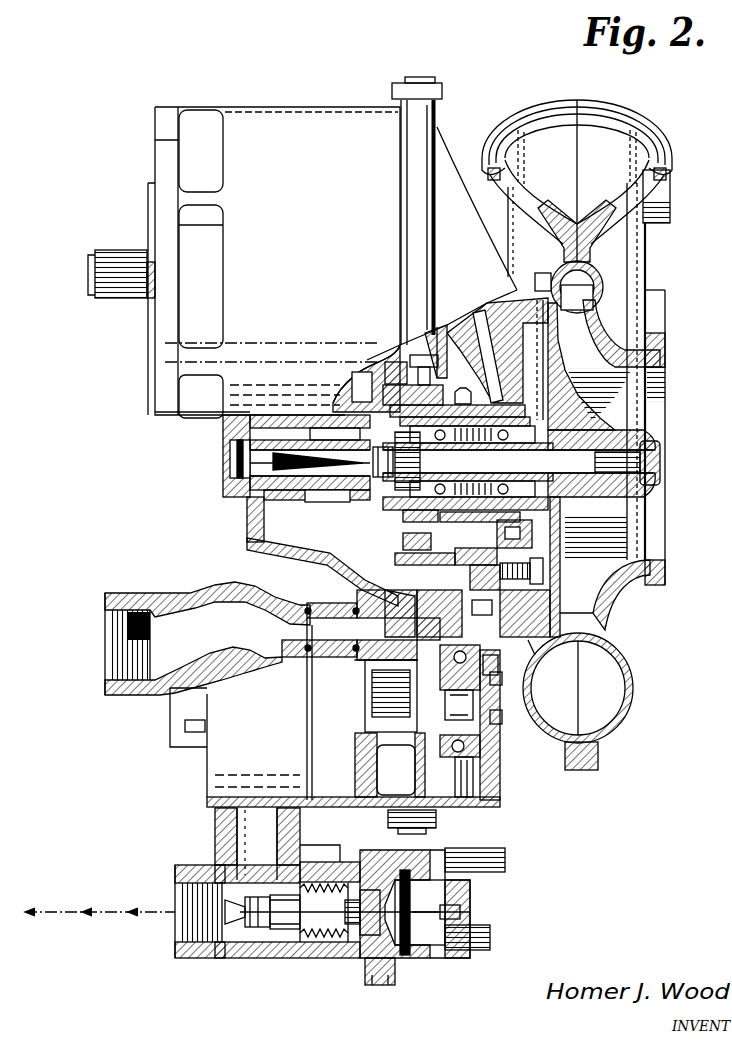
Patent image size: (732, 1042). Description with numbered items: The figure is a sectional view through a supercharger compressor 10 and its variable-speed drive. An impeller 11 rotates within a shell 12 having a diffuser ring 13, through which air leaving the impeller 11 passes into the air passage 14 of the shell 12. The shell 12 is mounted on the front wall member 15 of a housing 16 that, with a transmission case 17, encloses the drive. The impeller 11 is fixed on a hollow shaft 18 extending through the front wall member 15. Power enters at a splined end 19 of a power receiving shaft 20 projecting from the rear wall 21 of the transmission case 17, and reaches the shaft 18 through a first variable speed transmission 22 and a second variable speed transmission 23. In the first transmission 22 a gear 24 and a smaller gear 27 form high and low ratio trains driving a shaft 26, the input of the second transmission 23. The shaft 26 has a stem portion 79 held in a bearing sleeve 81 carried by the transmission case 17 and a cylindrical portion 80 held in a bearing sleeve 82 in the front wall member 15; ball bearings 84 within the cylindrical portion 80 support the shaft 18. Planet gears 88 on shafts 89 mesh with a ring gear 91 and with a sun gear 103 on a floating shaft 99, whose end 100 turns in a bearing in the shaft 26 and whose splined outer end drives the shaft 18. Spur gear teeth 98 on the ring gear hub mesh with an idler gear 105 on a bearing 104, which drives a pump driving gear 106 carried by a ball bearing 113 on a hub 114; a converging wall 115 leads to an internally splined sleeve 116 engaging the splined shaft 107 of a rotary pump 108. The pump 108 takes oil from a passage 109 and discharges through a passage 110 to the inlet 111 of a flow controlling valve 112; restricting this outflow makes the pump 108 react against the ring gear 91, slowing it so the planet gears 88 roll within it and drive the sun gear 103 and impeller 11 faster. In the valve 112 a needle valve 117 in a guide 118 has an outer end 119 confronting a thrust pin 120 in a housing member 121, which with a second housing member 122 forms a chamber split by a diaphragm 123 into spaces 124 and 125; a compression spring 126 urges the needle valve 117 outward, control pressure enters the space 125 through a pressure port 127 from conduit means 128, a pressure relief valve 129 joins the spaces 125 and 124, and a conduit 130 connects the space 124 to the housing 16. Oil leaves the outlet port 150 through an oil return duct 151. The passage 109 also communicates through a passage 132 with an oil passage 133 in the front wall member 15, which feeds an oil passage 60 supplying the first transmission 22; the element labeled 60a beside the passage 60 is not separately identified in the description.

The compressor 10 is at (657, 291).
The impeller 11 is at (584, 352).
The shell 12 is at (648, 258).
The diffuser ring 13 is at (604, 288).
The air passage 14 is at (606, 693).
The front wall member 15 is at (440, 162).
The housing 16 is at (448, 117).
The transmission case 17 is at (346, 100).
The shaft 18 is at (641, 419).
The splined end 19 is at (122, 250).
The power receiving shaft 20 is at (152, 277).
The rear wall 21 is at (156, 413).
The first variable speed transmission 22 is at (320, 268).
The second variable speed transmission 23 is at (250, 548).
The gear 24 is at (336, 392).
The shaft 26 is at (283, 427).
The gear 27 is at (359, 376).
The oil passage 60 is at (490, 338).
The support plate 60a is at (535, 285).
The stem portion 79 is at (244, 500).
The cylindrical portion 80 is at (581, 535).
The bearing sleeve 81 is at (286, 508).
The bearing sleeve 82 is at (402, 561).
The ball bearings 84 is at (518, 461).
The planet gears 88 is at (448, 340).
The shafts 89 is at (393, 352).
The ring gear 91 is at (428, 337).
The spur gear teeth 98 is at (462, 388).
The floating shaft 99 is at (653, 470).
The end 100 is at (390, 468).
The sun gear 103 is at (430, 461).
The bearing 104 is at (536, 657).
The idler gear 105 is at (500, 676).
The pump driving gear 106 is at (440, 756).
The splined shaft 107 is at (372, 698).
The rotary pump 108 is at (286, 726).
The passage 109 is at (203, 618).
The discharge passage 110 is at (254, 834).
The inlet 111 is at (298, 860).
The flow controlling valve 112 is at (312, 882).
The ball bearing 113 is at (478, 744).
The hub 114 is at (490, 700).
The converging wall 115 is at (420, 723).
The internally splined sleeve 116 is at (395, 758).
The needle valve 117 is at (262, 950).
The guide 118 is at (288, 950).
The outer end 119 is at (333, 945).
The thrust pin 120 is at (365, 960).
The housing member 121 is at (380, 845).
The second housing member 122 is at (442, 962).
The diaphragm 123 is at (422, 978).
The space 124 is at (370, 985).
The space 125 is at (432, 880).
The compression spring 126 is at (320, 960).
The pressure port 127 is at (460, 929).
The conduit means 128 is at (474, 950).
The pressure relief valve 129 is at (456, 852).
The conduit 130 is at (383, 986).
The passage 132 is at (330, 618).
The oil passage 133 is at (545, 592).
The outlet port 150 is at (183, 905).
The oil return duct 151 is at (92, 912).